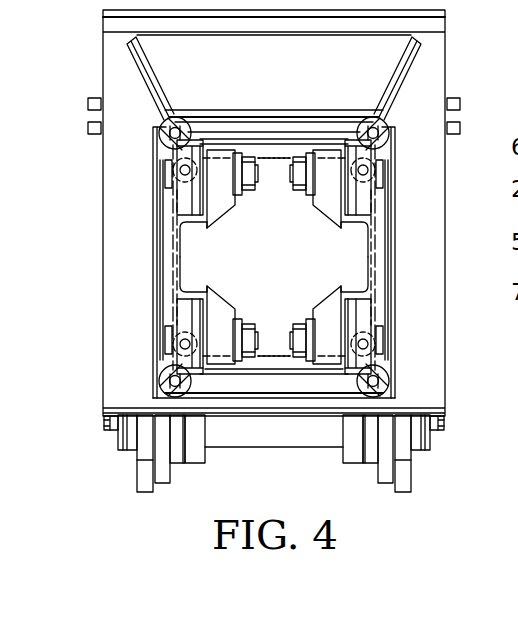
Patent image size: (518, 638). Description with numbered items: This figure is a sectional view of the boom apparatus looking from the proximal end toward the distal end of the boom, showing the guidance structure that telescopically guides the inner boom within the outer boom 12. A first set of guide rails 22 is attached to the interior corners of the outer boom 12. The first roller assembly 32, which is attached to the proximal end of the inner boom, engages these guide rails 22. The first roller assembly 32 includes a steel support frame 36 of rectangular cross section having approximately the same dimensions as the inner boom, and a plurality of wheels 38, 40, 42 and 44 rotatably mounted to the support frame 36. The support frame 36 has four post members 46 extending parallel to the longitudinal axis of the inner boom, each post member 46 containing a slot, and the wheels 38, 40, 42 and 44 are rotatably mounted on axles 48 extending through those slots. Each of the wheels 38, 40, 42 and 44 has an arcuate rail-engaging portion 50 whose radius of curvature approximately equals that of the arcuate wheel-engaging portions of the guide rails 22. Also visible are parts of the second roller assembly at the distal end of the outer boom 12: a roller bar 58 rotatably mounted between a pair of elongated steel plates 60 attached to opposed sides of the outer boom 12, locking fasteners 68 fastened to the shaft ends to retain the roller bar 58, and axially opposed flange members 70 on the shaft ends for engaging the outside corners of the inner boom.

The outer boom 12 is at (143, 100).
The guide rails 22 is at (159, 131).
The first roller assembly 32 is at (170, 258).
The support frame 36 is at (378, 258).
The wheel 38 is at (177, 200).
The wheel 40 is at (371, 200).
The wheel 42 is at (177, 321).
The wheel 44 is at (371, 321).
The post members 46 is at (325, 311).
The axles 48 is at (295, 180).
The arcuate rail-engaging portion 50 is at (172, 170).
The roller bar 58 is at (277, 435).
The steel plates 60 is at (142, 474).
The locking fasteners 68 is at (104, 424).
The flange members 70 is at (176, 458).